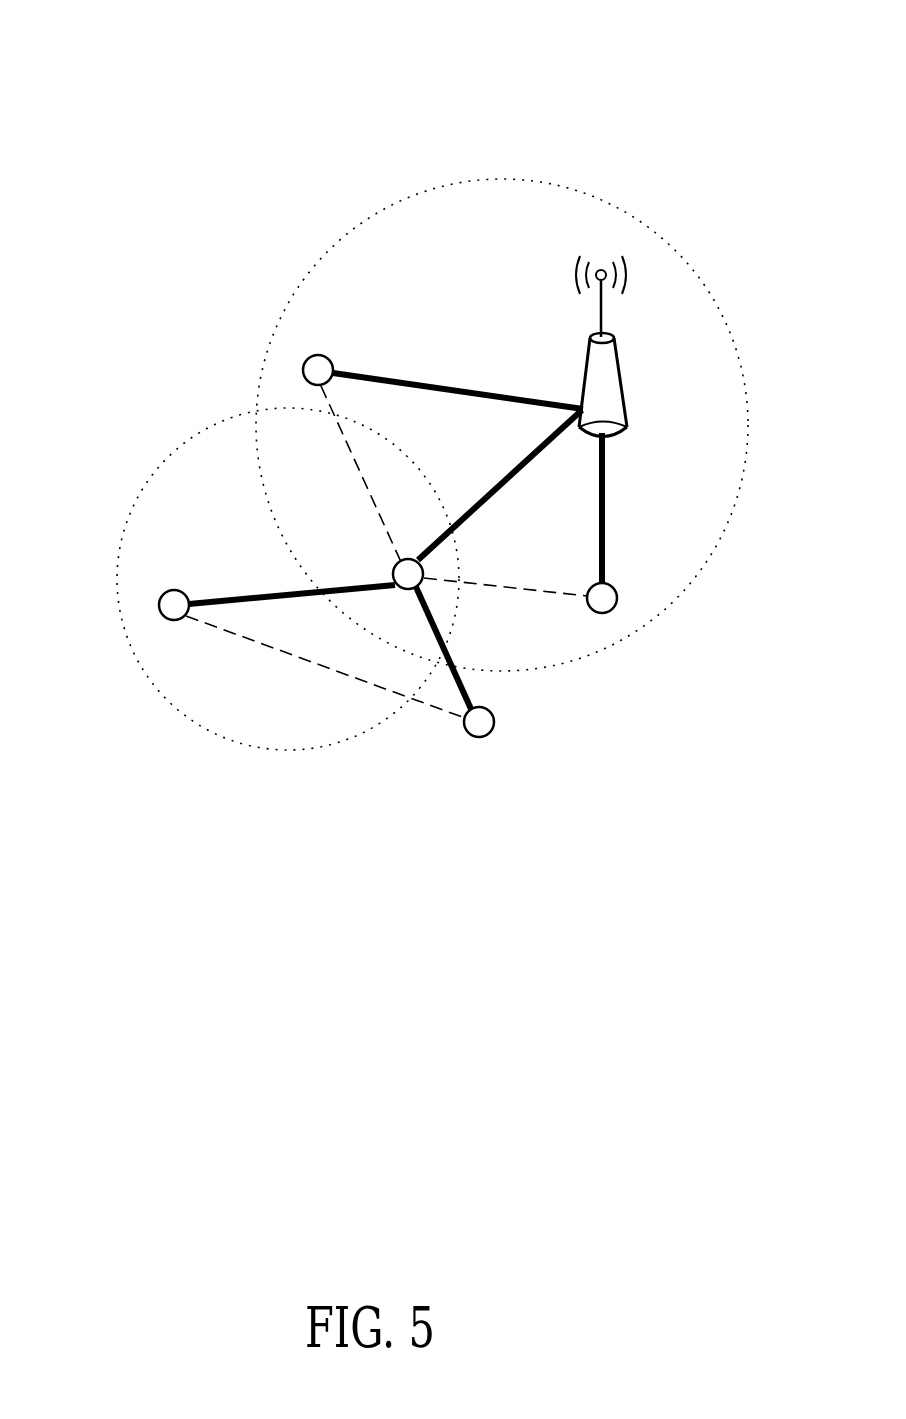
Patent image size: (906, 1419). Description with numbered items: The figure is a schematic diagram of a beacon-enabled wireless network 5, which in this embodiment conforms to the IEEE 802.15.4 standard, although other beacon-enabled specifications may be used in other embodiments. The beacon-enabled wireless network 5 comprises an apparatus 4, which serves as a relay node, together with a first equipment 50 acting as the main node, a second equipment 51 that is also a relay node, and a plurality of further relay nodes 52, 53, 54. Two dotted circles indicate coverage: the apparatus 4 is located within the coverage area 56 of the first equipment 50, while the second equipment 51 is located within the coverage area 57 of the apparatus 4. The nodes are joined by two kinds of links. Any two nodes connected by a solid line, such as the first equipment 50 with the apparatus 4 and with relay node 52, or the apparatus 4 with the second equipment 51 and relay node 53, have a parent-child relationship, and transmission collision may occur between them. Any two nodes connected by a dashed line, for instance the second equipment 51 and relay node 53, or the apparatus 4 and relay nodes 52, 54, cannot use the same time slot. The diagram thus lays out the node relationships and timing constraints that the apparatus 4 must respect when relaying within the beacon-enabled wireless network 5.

The beacon-enabled wireless network 5 is at (404, 80).
The first equipment 50 is at (585, 365).
The second equipment 51 is at (158, 601).
The relay node 52 is at (316, 354).
The relay node 53 is at (485, 738).
The relay node 54 is at (617, 604).
The apparatus 4 is at (400, 559).
The coverage area 56 is at (679, 248).
The coverage area 57 is at (151, 473).